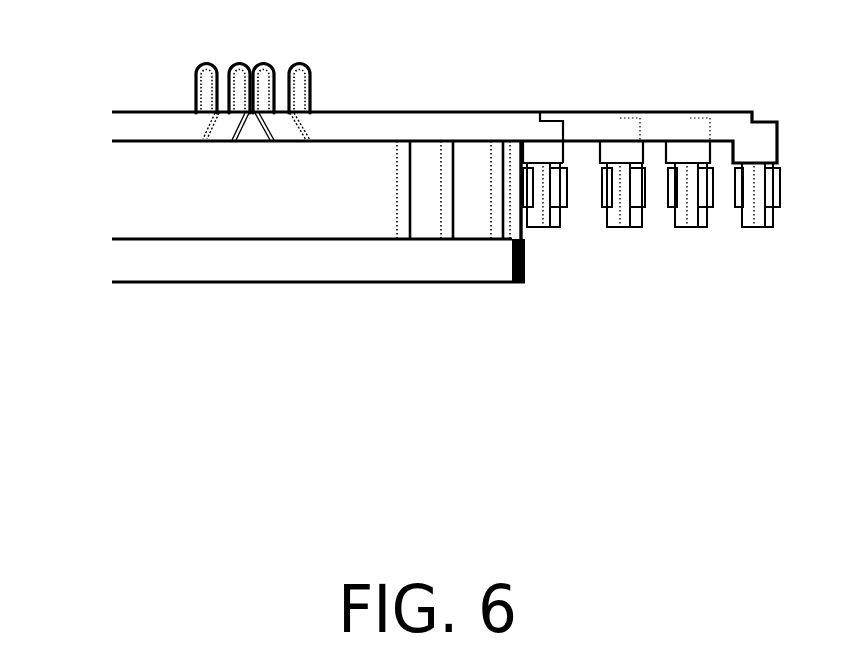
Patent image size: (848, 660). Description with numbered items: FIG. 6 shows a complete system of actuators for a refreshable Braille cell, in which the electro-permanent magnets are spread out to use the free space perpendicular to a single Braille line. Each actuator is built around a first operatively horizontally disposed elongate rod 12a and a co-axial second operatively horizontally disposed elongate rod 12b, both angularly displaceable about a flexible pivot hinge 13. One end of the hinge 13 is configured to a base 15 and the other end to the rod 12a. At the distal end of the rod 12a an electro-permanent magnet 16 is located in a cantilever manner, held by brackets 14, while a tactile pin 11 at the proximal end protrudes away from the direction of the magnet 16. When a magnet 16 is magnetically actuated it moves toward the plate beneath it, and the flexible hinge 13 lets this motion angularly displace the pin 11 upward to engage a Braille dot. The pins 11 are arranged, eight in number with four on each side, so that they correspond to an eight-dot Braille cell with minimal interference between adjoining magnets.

The tactile pin 11 is at (197, 73).
The first operatively horizontally disposed elongate rod 12a is at (500, 123).
The second operatively horizontally disposed elongate rod 12b is at (127, 125).
The pivot hinge 13 is at (507, 218).
The brackets 14 is at (767, 197).
The base 15 is at (318, 260).
The electro-permanent magnet 16 is at (753, 272).